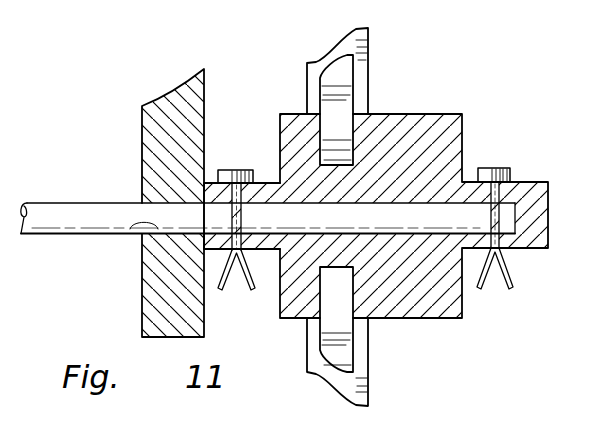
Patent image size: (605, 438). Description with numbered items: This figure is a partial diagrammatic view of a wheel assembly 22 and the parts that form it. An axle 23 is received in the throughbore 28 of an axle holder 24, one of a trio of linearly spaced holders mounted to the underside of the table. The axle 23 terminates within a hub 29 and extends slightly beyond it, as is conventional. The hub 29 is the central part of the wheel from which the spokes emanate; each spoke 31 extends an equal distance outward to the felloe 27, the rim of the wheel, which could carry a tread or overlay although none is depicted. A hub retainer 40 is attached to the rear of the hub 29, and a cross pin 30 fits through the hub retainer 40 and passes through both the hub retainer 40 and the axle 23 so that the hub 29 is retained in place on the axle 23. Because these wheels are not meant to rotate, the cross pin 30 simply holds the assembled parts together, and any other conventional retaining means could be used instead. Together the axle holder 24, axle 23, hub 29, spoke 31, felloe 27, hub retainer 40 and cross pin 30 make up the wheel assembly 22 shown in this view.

The wheel assembly 22 is at (500, 92).
The axle 23 is at (72, 210).
The axle holder 24 is at (147, 137).
The felloe 27 is at (313, 92).
The throughbore 28 is at (131, 232).
The hub 29 is at (410, 118).
The cross pin 30 is at (233, 169).
The spoke 31 is at (348, 78).
The hub retainer 40 is at (266, 262).